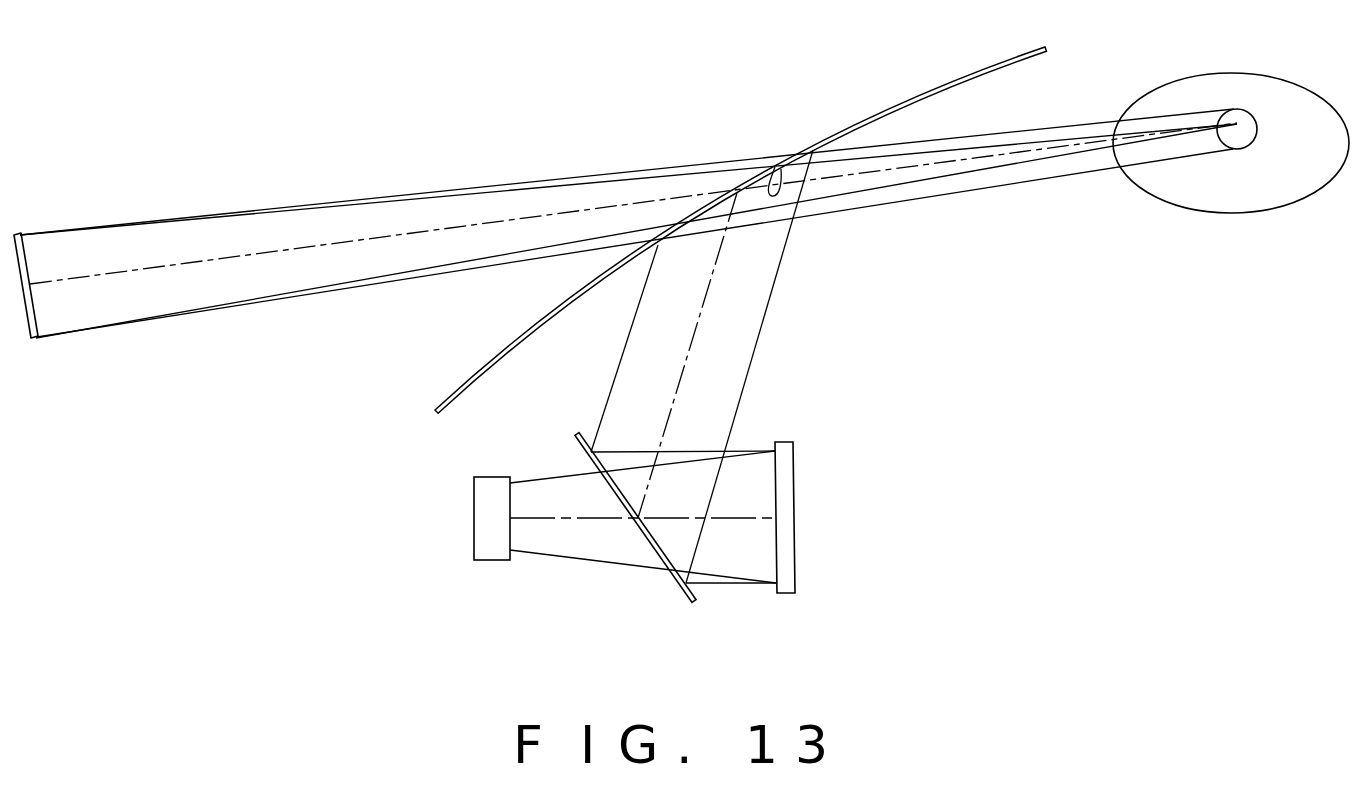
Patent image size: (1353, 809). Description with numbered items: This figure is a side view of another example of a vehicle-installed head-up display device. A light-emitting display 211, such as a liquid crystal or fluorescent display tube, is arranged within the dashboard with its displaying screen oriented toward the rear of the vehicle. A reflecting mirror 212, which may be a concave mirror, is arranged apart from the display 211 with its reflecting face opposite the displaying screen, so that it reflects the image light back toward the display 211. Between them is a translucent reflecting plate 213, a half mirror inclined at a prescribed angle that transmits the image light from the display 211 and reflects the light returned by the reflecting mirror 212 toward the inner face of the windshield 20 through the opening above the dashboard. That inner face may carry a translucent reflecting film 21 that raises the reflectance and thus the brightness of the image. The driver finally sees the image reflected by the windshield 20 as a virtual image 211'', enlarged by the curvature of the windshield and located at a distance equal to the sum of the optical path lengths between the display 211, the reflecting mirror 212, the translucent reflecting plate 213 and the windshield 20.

The windshield 20 is at (866, 118).
The translucent reflecting film 21 is at (778, 168).
The virtual image 211'' is at (58, 233).
The light-emitting display 211 is at (436, 502).
The reflecting mirror 212 is at (793, 480).
The translucent reflecting plate 213 is at (658, 547).